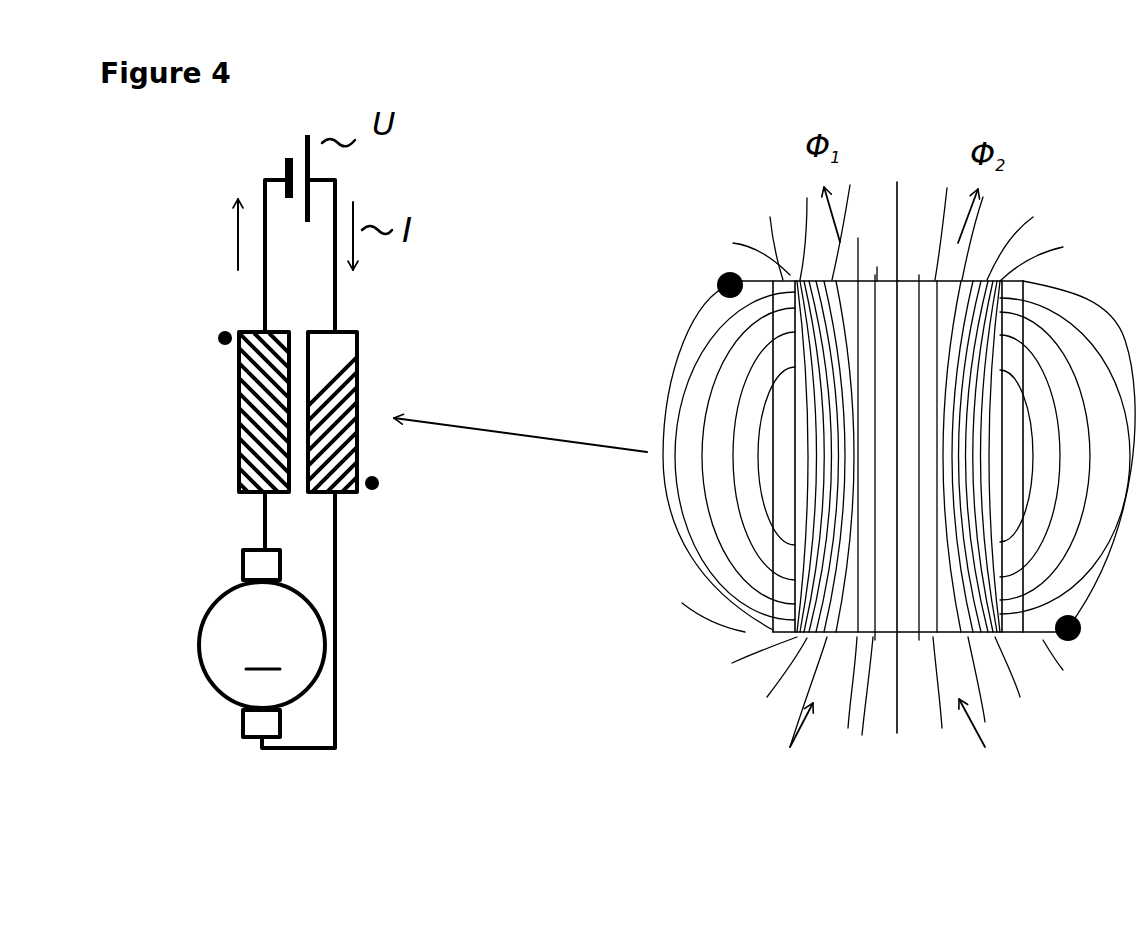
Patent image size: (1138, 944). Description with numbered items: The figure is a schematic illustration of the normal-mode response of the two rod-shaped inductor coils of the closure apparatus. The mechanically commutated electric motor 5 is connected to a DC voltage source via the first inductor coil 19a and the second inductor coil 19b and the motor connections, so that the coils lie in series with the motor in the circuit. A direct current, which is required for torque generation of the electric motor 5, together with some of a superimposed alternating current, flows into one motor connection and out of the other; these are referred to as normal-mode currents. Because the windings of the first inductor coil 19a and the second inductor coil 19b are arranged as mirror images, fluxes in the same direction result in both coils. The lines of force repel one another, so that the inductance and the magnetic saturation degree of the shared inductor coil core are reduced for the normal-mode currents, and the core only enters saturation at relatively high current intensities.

The first inductor coil 19a is at (238, 442).
The second inductor coil 19b is at (358, 368).
The electric motor 5 is at (200, 653).